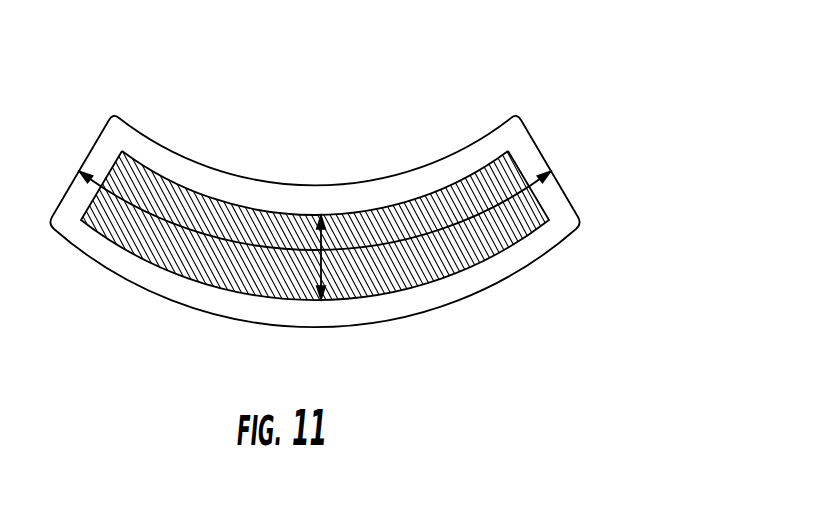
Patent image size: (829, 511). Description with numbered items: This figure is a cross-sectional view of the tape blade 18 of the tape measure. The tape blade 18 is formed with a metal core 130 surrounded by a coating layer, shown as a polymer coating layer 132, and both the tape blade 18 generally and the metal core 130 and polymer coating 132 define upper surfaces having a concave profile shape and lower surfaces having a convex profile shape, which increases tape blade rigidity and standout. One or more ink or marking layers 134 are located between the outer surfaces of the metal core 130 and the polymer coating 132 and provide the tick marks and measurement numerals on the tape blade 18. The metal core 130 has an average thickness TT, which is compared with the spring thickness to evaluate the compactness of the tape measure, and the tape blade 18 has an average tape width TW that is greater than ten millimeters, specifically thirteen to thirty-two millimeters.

The tape blade 18 is at (642, 92).
The metal core 130 is at (252, 245).
The polymer coating layer 132 is at (183, 168).
The ink or marking layer 134 is at (435, 191).
The average tape width TW is at (422, 236).
The average thickness TT is at (318, 262).